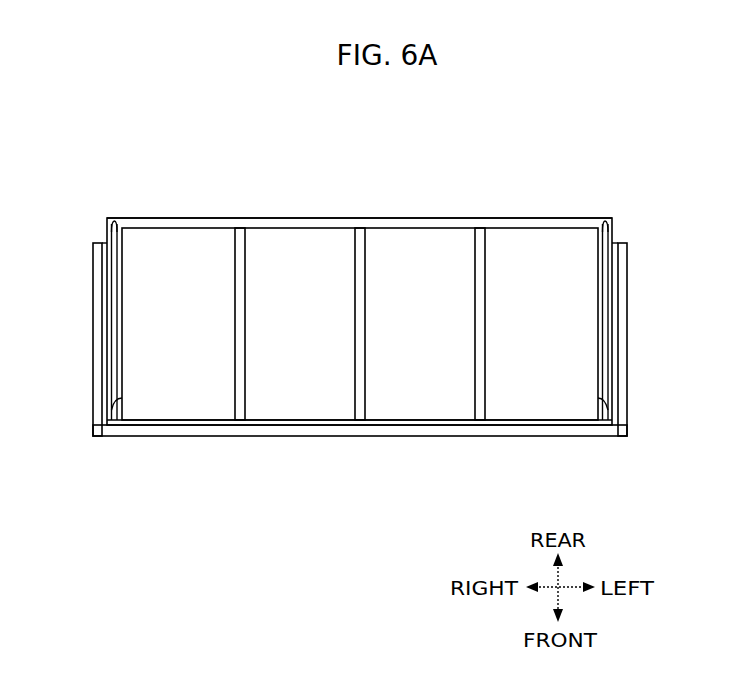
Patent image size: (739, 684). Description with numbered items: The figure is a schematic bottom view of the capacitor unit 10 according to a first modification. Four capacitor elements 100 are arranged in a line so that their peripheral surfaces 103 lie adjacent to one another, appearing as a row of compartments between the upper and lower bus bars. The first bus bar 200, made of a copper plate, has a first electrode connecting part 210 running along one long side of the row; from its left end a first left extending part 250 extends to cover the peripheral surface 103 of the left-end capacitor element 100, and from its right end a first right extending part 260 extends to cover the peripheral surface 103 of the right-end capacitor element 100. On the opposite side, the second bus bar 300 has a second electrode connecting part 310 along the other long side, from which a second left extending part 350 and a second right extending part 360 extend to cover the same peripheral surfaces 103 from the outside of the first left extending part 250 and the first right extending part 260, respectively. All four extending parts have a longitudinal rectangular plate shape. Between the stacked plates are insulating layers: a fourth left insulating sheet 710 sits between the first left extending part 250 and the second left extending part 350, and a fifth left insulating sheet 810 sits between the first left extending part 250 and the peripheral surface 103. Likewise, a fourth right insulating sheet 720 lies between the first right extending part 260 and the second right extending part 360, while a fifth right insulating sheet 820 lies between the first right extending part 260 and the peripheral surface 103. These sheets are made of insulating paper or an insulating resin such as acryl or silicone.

The capacitor unit 10 is at (212, 196).
The capacitor element 100 is at (178, 414).
The peripheral surface 103 is at (115, 218).
The first bus bar 200 is at (326, 216).
The first electrode connecting part 210 is at (395, 218).
The first left extending part 250 is at (606, 338).
The first right extending part 260 is at (112, 325).
The second bus bar 300 is at (330, 438).
The second electrode connecting part 310 is at (400, 430).
The second left extending part 350 is at (627, 290).
The second right extending part 360 is at (92, 284).
The fourth left insulating sheet 710 is at (618, 240).
The fourth right insulating sheet 720 is at (103, 237).
The fifth left insulating sheet 810 is at (600, 398).
The fifth right insulating sheet 820 is at (120, 397).